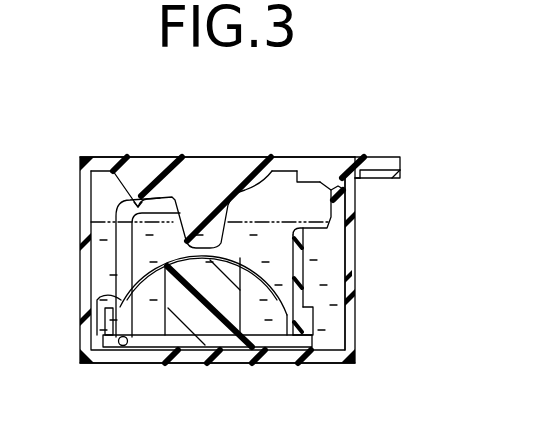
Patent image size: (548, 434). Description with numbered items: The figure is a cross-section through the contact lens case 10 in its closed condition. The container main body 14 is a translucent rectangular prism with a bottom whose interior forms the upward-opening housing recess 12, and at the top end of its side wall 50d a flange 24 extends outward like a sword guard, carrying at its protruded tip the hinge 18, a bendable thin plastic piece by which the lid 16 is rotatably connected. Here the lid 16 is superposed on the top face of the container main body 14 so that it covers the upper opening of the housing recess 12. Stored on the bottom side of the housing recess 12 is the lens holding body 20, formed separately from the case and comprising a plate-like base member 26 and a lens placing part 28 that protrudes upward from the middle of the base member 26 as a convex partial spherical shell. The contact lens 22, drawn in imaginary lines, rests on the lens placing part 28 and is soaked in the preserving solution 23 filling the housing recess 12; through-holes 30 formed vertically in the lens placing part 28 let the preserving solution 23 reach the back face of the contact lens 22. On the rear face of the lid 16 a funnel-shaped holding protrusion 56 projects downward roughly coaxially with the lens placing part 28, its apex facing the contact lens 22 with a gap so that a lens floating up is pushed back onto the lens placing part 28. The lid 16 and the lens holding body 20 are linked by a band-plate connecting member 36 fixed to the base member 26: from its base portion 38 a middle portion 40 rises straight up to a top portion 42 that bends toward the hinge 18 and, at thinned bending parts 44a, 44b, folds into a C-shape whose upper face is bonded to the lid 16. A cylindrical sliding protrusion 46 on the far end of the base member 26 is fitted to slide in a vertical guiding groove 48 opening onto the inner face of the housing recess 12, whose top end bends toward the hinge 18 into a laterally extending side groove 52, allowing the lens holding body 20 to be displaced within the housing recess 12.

The contact lens case 10 is at (390, 100).
The housing recess 12 is at (90, 213).
The container main body 14 is at (365, 330).
The lid 16 is at (302, 160).
The hinge 18 is at (400, 163).
The lens holding body 20 is at (320, 357).
The contact lens 22 is at (143, 278).
The preserving solution 23 is at (110, 240).
The flange 24 is at (373, 175).
The base member 26 is at (277, 341).
The lens placing part 28 is at (177, 283).
The through-hole 30 is at (166, 308).
The connecting member 36 is at (438, 213).
The base portion 38 is at (303, 325).
The middle portion 40 is at (290, 270).
The top portion 42 is at (333, 202).
The bending part 44a is at (332, 225).
The bending part 44b is at (322, 182).
The sliding protrusion 46 is at (122, 346).
The guiding groove 48 is at (118, 284).
The side wall 50d is at (347, 278).
The side groove 52 is at (138, 205).
The holding protrusion 56 is at (218, 214).